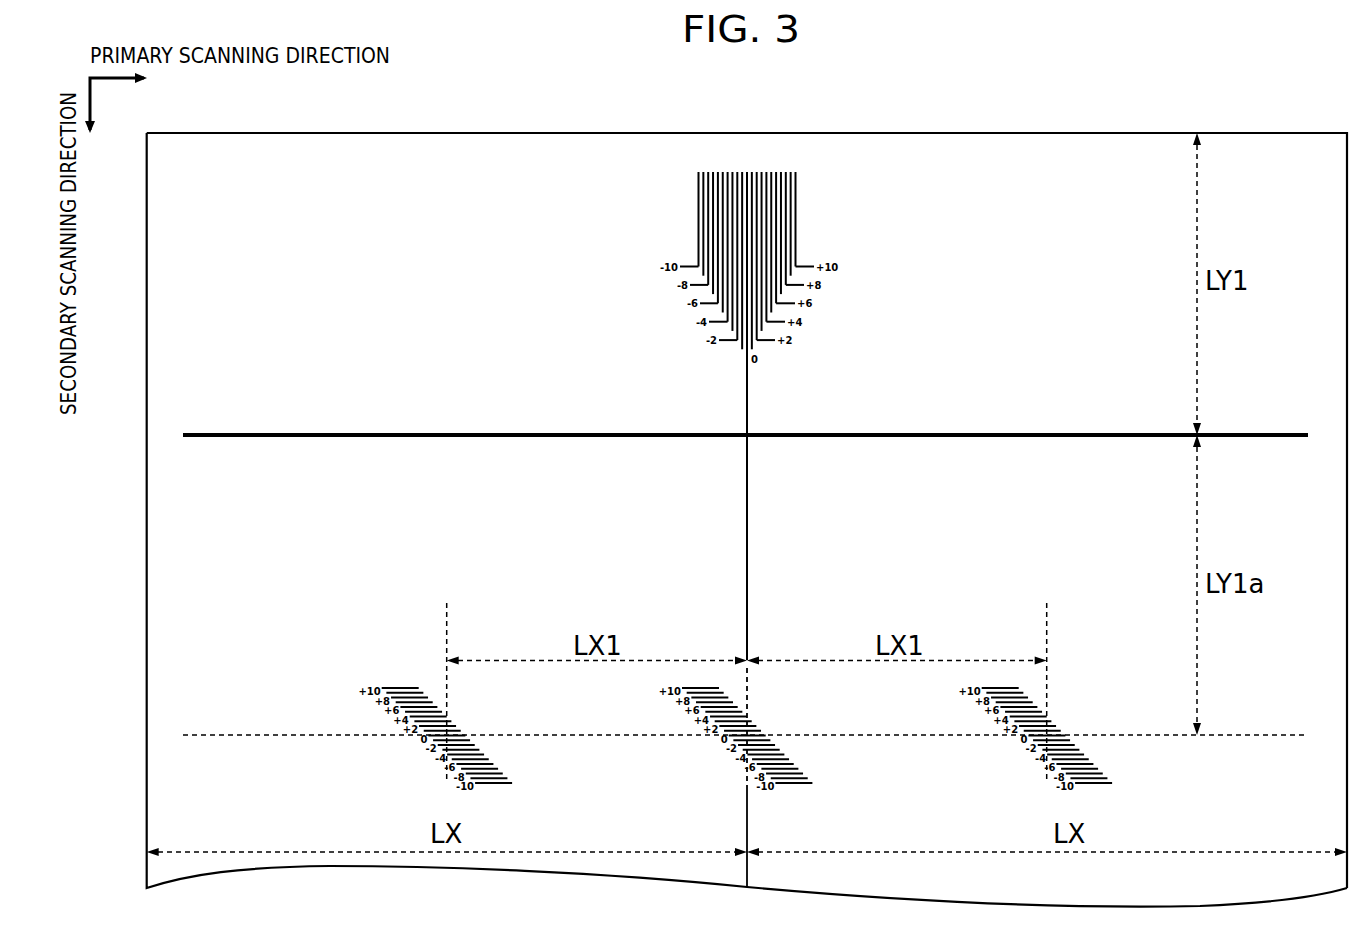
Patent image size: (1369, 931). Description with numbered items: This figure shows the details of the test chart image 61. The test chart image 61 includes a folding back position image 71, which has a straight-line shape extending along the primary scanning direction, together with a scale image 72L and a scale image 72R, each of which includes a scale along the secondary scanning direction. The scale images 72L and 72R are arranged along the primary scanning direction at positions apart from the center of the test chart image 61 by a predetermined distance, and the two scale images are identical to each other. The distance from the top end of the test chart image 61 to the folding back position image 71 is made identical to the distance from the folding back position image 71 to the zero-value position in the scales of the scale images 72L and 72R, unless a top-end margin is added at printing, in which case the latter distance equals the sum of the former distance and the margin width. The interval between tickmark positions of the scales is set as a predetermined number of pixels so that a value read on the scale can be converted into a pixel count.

The test chart image 61 is at (1282, 133).
The folding back position image 71 is at (1249, 427).
The scale image 72L is at (482, 713).
The scale image 72R is at (1082, 713).